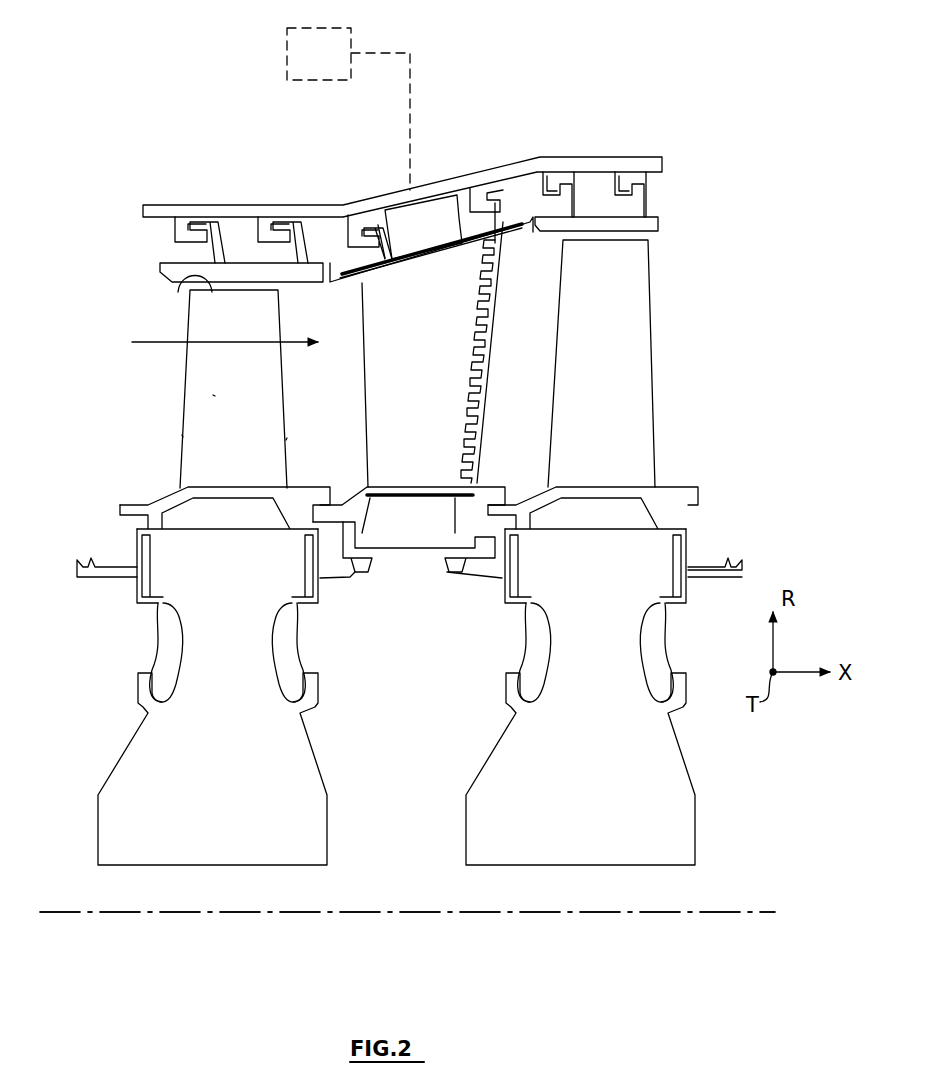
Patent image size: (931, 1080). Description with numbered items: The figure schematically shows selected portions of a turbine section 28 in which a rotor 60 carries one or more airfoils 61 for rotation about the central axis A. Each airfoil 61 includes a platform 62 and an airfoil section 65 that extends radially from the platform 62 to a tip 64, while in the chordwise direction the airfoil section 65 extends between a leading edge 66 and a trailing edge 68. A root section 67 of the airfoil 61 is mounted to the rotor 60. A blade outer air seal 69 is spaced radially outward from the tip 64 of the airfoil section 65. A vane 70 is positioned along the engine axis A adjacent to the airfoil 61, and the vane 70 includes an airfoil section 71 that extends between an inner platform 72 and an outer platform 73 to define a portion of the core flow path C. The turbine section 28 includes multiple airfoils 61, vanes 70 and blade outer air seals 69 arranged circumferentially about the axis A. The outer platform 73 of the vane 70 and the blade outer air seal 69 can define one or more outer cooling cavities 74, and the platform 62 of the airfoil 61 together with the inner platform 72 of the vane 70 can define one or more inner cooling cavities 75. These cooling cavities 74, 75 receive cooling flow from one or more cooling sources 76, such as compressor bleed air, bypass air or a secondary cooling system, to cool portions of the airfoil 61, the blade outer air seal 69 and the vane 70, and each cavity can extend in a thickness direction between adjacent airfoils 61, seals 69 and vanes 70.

The turbine section 28 is at (72, 155).
The cooling source 76 is at (333, 65).
The blade outer air seal 69 is at (160, 268).
The outer cooling cavity 74 is at (435, 232).
The outer platform 73 is at (515, 240).
The airfoil section 71 is at (445, 435).
The vane 70 is at (494, 358).
The inner platform 72 is at (494, 483).
The airfoil 61 is at (285, 388).
The tip 64 is at (178, 290).
The airfoil section 65 is at (213, 395).
The leading edge 66 is at (182, 435).
The trailing edge 68 is at (287, 438).
The platform 62 is at (135, 505).
The root section 67 is at (170, 575).
The rotor 60 is at (118, 762).
The inner cooling cavity 75 is at (417, 670).
The core flow path C is at (140, 343).
The central axis A is at (737, 910).